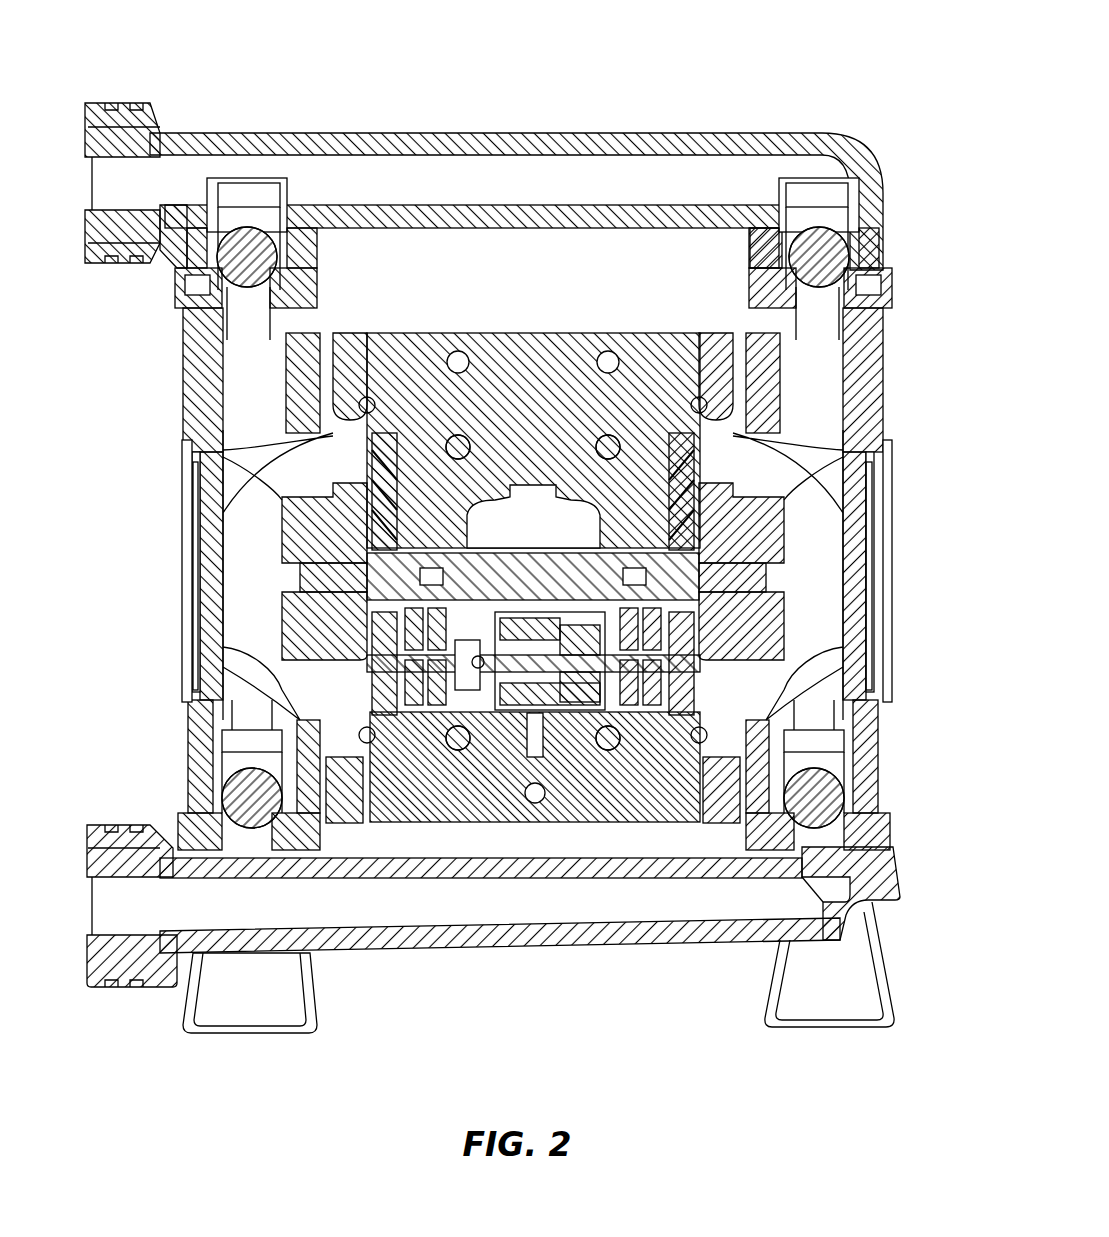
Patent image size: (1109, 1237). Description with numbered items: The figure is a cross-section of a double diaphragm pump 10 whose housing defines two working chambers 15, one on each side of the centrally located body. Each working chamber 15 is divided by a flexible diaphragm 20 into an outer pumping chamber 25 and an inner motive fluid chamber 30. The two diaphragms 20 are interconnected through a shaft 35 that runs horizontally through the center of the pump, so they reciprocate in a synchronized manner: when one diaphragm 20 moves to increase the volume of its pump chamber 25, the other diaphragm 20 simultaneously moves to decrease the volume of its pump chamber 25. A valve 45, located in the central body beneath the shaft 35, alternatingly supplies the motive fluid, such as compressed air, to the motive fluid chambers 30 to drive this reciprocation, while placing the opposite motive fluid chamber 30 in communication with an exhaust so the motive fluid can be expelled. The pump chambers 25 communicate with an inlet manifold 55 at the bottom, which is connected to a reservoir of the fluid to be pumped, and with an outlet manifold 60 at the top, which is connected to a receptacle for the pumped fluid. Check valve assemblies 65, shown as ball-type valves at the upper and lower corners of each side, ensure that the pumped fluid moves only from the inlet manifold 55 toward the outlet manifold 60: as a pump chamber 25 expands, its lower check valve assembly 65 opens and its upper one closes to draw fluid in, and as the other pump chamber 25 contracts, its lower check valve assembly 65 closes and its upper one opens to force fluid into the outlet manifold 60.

The double diaphragm pump 10 is at (693, 53).
The working chamber 15 is at (215, 664).
The flexible diaphragm 20 is at (230, 470).
The pumping chamber 25 is at (300, 660).
The motive fluid chamber 30 is at (378, 438).
The shaft 35 is at (494, 488).
The valve 45 is at (522, 700).
The inlet manifold 55 is at (600, 945).
The outlet manifold 60 is at (450, 133).
The check valve assembly 65 is at (184, 288).